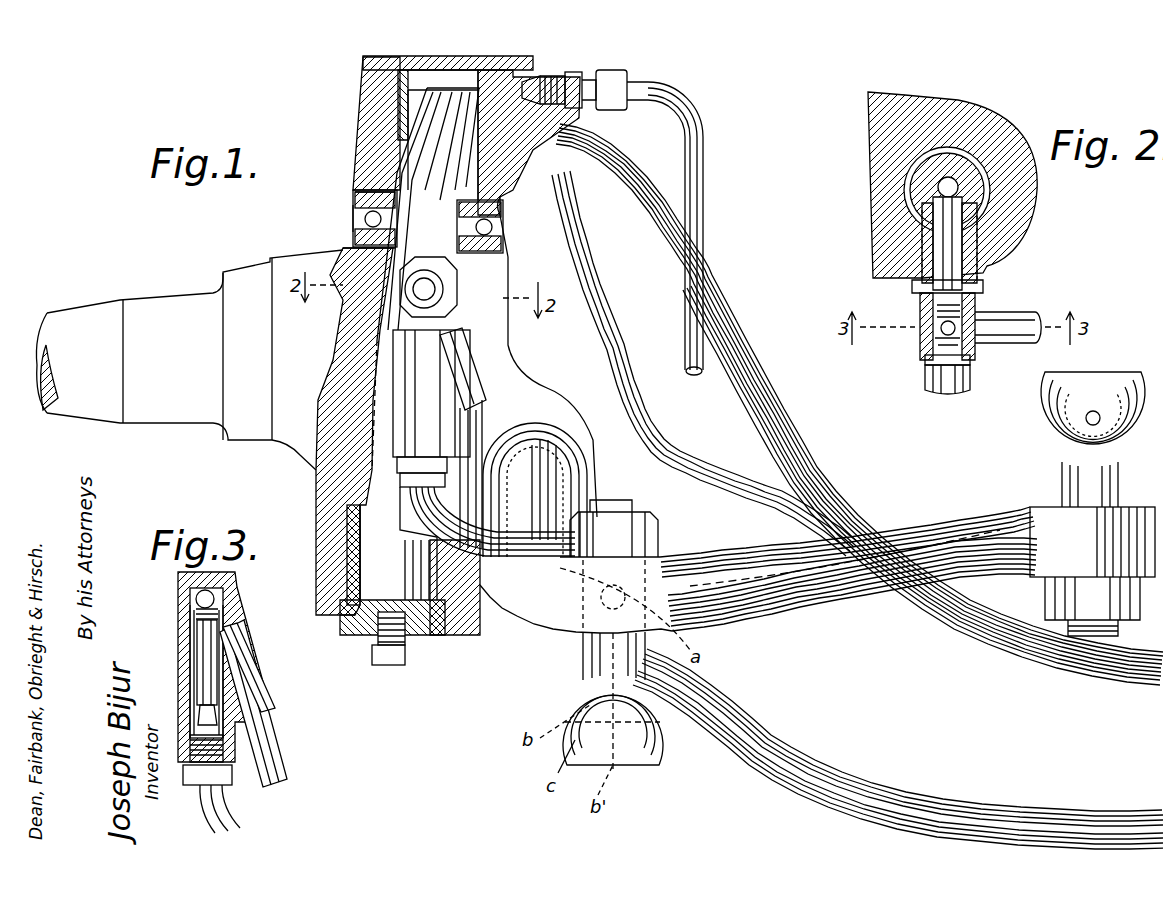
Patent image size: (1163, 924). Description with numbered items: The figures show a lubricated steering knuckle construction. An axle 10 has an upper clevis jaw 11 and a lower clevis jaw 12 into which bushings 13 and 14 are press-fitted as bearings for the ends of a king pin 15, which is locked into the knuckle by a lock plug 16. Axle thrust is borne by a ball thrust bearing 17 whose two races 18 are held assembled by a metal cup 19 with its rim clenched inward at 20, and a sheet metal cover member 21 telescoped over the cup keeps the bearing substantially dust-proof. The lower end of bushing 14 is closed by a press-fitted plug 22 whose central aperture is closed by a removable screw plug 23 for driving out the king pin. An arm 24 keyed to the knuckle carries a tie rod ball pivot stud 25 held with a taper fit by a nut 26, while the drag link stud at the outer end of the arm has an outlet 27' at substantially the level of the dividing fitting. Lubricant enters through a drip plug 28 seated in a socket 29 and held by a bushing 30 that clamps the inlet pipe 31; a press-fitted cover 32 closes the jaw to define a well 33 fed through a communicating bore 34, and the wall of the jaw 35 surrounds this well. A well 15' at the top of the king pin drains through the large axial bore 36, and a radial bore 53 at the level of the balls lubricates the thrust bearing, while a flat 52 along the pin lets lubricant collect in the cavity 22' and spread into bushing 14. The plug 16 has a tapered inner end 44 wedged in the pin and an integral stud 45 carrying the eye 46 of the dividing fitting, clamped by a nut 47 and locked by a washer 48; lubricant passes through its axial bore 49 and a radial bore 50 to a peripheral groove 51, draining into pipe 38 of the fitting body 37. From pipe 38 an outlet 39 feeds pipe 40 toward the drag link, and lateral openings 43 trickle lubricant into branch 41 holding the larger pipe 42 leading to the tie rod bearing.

In FIG. 1, the axle 10 is at (752, 364).
In FIG. 1, the upper clevis jaw 11 is at (520, 152).
In FIG. 1, the lower clevis jaw 12 is at (325, 583).
In FIG. 1, the bushing 13 is at (435, 140).
In FIG. 1, the bushing 14 is at (350, 545).
In FIG. 1, the king pin 15 is at (360, 540).
In FIG. 1, the well 15' is at (352, 59).
In FIG. 2, the lock plug 16 is at (985, 276).
In FIG. 1, the ball thrust bearing 17 is at (366, 221).
In FIG. 1, the races 18 is at (353, 214).
In FIG. 1, the metal cup 19 is at (355, 244).
In FIG. 1, the clenched rim 20 is at (360, 200).
In FIG. 1, the sheet metal cover member 21 is at (505, 228).
In FIG. 1, the press-fitted plug 22 is at (409, 611).
In FIG. 1, the cavity 22' is at (326, 642).
In FIG. 1, the screw plug 23 is at (406, 648).
In FIG. 1, the arm 24 is at (555, 470).
In FIG. 1, the tie rod ball pivot stud 25 is at (580, 703).
In FIG. 1, the nut 26 is at (650, 541).
In FIG. 1, the outlet 27' is at (1075, 504).
In FIG. 1, the drip plug 28 is at (585, 80).
In FIG. 1, the socket 29 is at (533, 74).
In FIG. 1, the bushing 30 is at (622, 86).
In FIG. 1, the inlet pipe 31 is at (705, 200).
In FIG. 1, the press-fitted cover 32 is at (462, 62).
In FIG. 1, the well or cavity 33 is at (398, 80).
In FIG. 1, the communicating bore 34 is at (512, 90).
In FIG. 1, the housing wall 35 is at (385, 115).
In FIG. 1, the bore 36 is at (420, 140).
In FIG. 1, the casting or forging 37 is at (416, 347).
In FIG. 3, the casting or forging 37 is at (188, 668).
In FIG. 3, the pipe 38 is at (195, 680).
In FIG. 1, the outlet 39 is at (412, 445).
In FIG. 3, the outlet 39 is at (200, 748).
In FIG. 1, the pipe 40 is at (523, 548).
In FIG. 3, the pipe 40 is at (232, 818).
In FIG. 1, the branch 41 is at (472, 400).
In FIG. 3, the branch 41 is at (262, 698).
In FIG. 1, the pipe 42 is at (478, 418).
In FIG. 3, the pipe 42 is at (280, 745).
In FIG. 3, the lateral openings 43 is at (197, 648).
In FIG. 2, the reduced tapered inner end 44 is at (935, 228).
In FIG. 2, the axial stud 45 is at (935, 318).
In FIG. 2, the eye 46 is at (990, 345).
In FIG. 2, the nut 47 is at (930, 378).
In FIG. 2, the washer 48 is at (930, 358).
In FIG. 2, the axial bore 49 is at (952, 243).
In FIG. 2, the radial bore 50 is at (975, 303).
In FIG. 3, the radial bore 50 is at (196, 612).
In FIG. 2, the peripheral groove 51 is at (960, 328).
In FIG. 3, the peripheral groove 51 is at (196, 599).
In FIG. 1, the flat 52 is at (506, 195).
In FIG. 1, the radial bore 53 is at (506, 258).